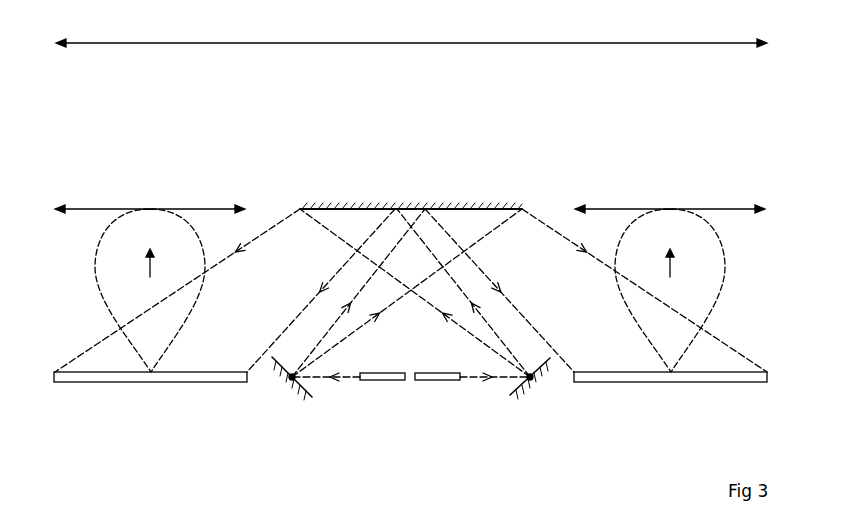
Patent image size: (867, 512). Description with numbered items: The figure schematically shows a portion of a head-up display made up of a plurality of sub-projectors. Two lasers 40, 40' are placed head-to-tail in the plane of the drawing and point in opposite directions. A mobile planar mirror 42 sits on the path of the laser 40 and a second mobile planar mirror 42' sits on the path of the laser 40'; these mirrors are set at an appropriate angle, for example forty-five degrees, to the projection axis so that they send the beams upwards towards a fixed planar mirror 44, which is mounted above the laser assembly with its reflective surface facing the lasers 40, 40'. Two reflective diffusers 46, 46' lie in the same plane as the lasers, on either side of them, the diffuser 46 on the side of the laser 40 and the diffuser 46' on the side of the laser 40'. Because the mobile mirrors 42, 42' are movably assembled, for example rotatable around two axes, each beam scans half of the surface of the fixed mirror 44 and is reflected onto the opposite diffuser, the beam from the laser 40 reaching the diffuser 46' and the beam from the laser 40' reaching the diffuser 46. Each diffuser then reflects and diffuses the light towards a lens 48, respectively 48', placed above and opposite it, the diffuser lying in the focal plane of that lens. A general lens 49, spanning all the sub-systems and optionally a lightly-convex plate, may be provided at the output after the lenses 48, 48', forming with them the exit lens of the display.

The general lens 49 is at (712, 43).
The lens 48 is at (150, 267).
The lens 48' is at (670, 268).
The fixed planar mirror 44 is at (357, 208).
The reflective diffuser 46 is at (150, 400).
The reflective diffuser 46' is at (670, 404).
The mobile planar mirror 42 is at (291, 396).
The mobile planar mirror 42' is at (530, 396).
The laser 40 is at (382, 402).
The laser 40' is at (438, 402).